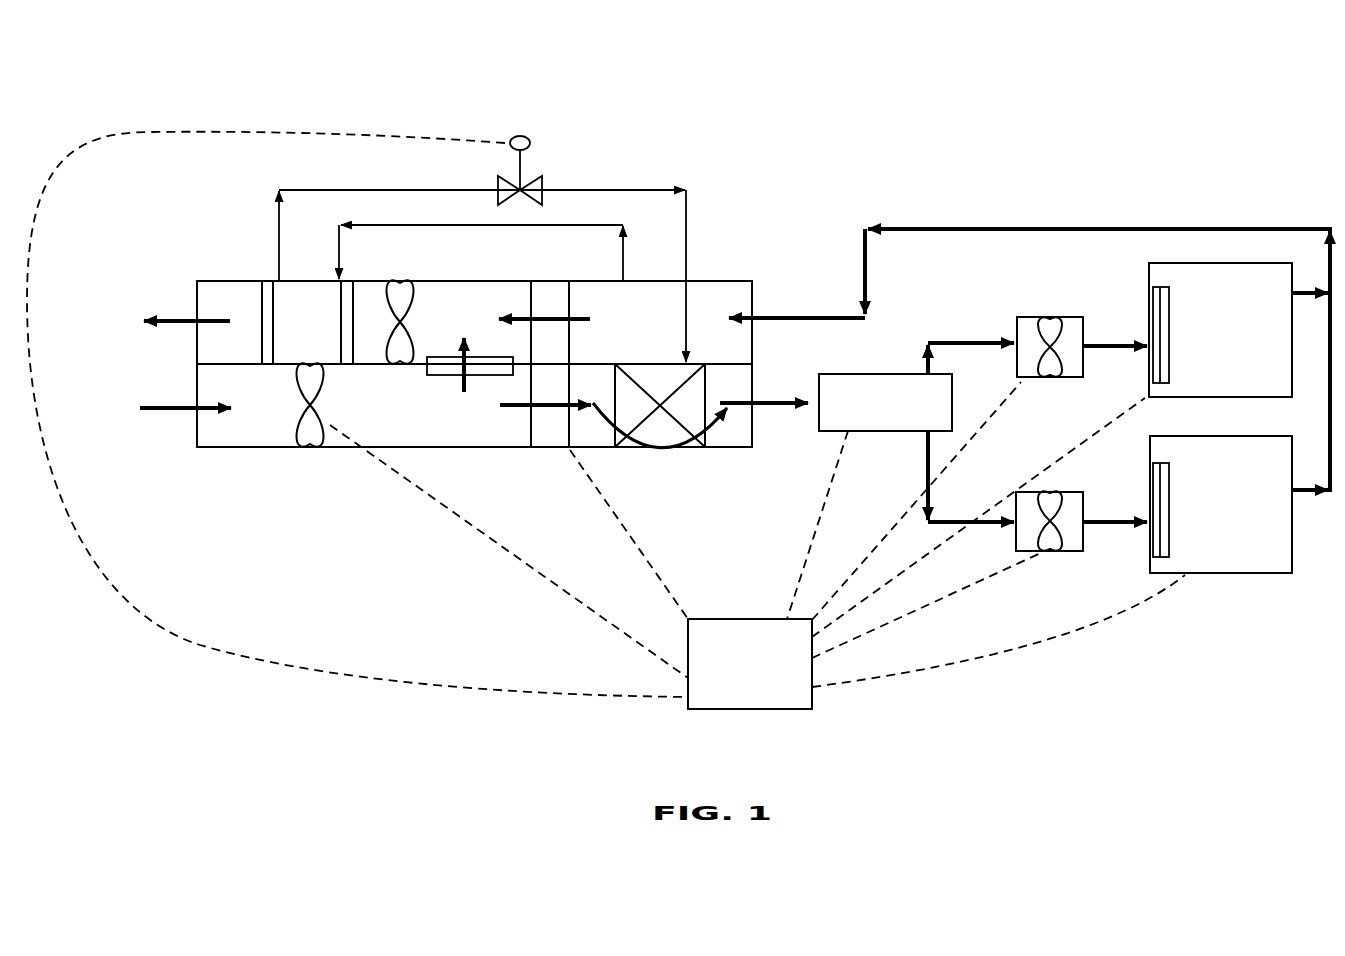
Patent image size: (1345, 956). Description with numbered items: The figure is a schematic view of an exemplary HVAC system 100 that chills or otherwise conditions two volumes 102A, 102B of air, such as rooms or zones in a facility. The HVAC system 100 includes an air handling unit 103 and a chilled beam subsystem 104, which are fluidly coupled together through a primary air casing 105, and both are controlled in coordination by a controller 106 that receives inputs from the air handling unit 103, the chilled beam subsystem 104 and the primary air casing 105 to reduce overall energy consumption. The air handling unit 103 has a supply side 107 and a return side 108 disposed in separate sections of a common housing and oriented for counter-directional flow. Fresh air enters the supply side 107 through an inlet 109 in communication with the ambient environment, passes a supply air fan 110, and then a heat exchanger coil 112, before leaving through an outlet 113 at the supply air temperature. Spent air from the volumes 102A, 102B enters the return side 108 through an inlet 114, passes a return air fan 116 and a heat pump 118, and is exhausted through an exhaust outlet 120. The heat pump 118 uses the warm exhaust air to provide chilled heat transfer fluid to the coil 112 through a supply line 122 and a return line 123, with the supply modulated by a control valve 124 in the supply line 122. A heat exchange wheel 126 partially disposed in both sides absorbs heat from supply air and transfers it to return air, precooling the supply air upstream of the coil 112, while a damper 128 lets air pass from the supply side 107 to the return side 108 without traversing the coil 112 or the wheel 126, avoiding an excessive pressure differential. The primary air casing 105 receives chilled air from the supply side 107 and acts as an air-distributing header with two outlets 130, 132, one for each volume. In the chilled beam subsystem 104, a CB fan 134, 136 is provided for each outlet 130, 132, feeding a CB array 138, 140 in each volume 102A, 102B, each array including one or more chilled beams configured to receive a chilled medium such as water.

The HVAC system 100 is at (203, 83).
The volume 102A is at (1238, 330).
The volume 102B is at (1239, 504).
The air handling unit 103 is at (587, 175).
The chilled beam subsystem 104 is at (1030, 278).
The primary air casing 105 is at (885, 402).
The controller 106 is at (606, 420).
The supply side 107 is at (252, 432).
The return side 108 is at (228, 297).
The inlet 109 is at (197, 415).
The supply air fan 110 is at (308, 449).
The heat exchanger coil 112 is at (648, 433).
The outlet 113 is at (758, 407).
The inlet 114 is at (752, 312).
The return air fan 116 is at (405, 283).
The heat pump 118 is at (307, 322).
The exhaust outlet 120 is at (197, 328).
The supply line 122 is at (660, 190).
The return line 123 is at (350, 225).
The control valve 124 is at (512, 137).
The heat exchange wheel 126 is at (540, 437).
The damper 128 is at (435, 378).
The outlet 130 is at (925, 370).
The outlet 132 is at (925, 433).
The CB fan 134 is at (1058, 318).
The CB fan 136 is at (1062, 553).
The CB array 138 is at (1170, 313).
The CB array 140 is at (1170, 490).